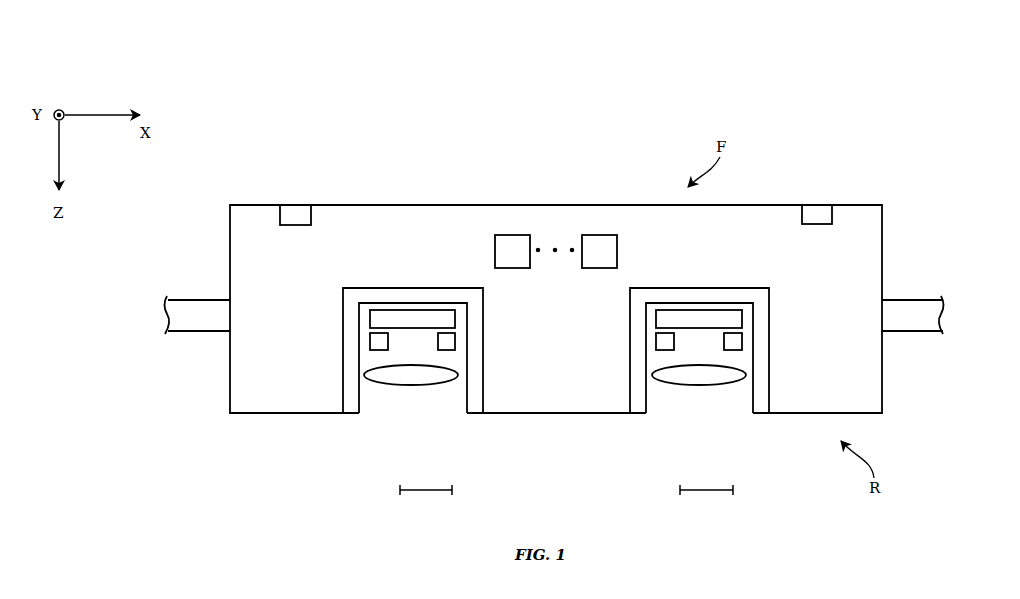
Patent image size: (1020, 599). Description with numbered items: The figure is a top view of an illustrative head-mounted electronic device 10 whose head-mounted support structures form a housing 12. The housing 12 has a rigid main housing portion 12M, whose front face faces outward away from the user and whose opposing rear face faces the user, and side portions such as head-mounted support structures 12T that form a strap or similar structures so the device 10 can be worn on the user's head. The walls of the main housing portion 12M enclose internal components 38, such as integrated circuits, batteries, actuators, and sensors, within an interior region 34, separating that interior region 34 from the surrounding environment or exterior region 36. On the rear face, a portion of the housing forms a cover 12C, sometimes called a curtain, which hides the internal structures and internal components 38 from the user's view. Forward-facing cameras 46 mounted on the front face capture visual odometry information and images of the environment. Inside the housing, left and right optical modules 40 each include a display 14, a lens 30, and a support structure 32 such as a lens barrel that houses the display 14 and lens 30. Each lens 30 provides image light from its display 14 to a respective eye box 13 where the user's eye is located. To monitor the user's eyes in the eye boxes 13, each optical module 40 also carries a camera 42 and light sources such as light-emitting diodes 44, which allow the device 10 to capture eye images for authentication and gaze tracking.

The electronic device 10 is at (822, 60).
The housing 12 is at (625, 213).
The main housing portion 12M is at (259, 200).
The cover 12C is at (249, 418).
The head-mounted support structures 12T is at (201, 310).
The eye boxes 13 is at (453, 490).
The display 14 is at (441, 318).
The lens 30 is at (660, 377).
The support structure 32 is at (360, 293).
The interior region 34 is at (846, 246).
The exterior region 36 is at (417, 176).
The internal components 38 is at (598, 240).
The optical modules 40 is at (330, 404).
The camera 42 is at (660, 343).
The light-emitting diodes 44 is at (374, 343).
The cameras 46 is at (296, 213).